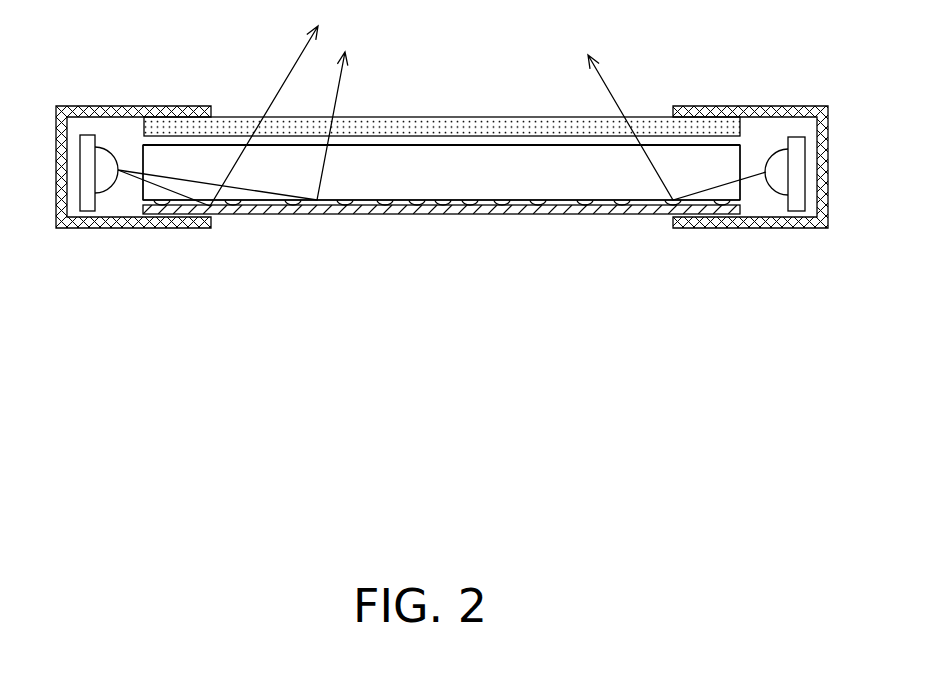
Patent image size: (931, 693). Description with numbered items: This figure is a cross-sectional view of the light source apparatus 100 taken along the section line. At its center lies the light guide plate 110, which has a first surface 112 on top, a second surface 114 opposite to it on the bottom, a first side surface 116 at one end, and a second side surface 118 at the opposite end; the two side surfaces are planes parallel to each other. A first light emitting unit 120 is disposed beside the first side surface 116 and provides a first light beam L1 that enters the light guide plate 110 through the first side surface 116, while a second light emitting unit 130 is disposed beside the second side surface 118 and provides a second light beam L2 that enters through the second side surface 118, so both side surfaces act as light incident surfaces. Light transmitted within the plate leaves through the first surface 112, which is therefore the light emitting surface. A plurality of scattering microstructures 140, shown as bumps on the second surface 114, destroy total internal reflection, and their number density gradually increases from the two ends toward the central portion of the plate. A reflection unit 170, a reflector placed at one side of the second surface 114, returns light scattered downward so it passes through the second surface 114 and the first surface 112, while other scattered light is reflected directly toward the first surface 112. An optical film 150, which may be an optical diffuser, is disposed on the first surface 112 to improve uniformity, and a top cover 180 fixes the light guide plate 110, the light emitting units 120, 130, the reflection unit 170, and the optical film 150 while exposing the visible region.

The light source apparatus 100 is at (438, 254).
The light guide plate 110 is at (616, 182).
The first surface 112 is at (504, 139).
The second surface 114 is at (513, 203).
The first side surface 116 is at (136, 195).
The second side surface 118 is at (745, 150).
The first light emitting unit 120 is at (80, 128).
The second light emitting unit 130 is at (802, 129).
The scattering microstructures 140 is at (162, 206).
The optical film 150 is at (430, 130).
The reflection unit 170 is at (455, 210).
The top cover 180 is at (688, 106).
The first light beam L1 is at (128, 168).
The second light beam L2 is at (766, 172).